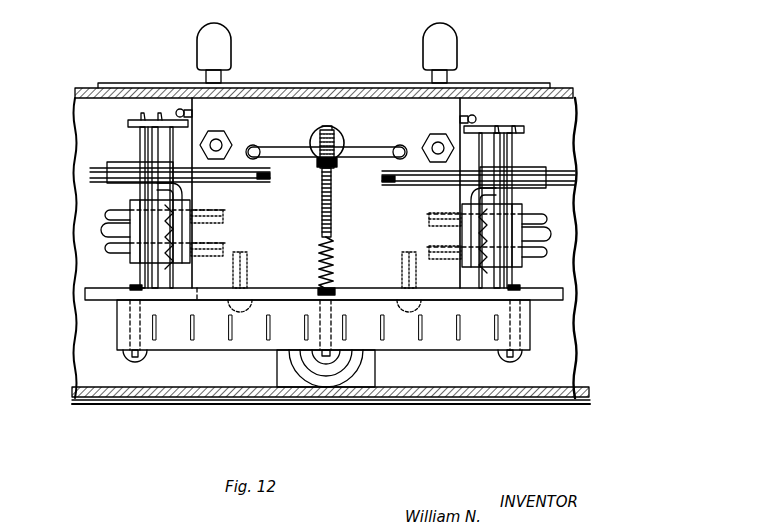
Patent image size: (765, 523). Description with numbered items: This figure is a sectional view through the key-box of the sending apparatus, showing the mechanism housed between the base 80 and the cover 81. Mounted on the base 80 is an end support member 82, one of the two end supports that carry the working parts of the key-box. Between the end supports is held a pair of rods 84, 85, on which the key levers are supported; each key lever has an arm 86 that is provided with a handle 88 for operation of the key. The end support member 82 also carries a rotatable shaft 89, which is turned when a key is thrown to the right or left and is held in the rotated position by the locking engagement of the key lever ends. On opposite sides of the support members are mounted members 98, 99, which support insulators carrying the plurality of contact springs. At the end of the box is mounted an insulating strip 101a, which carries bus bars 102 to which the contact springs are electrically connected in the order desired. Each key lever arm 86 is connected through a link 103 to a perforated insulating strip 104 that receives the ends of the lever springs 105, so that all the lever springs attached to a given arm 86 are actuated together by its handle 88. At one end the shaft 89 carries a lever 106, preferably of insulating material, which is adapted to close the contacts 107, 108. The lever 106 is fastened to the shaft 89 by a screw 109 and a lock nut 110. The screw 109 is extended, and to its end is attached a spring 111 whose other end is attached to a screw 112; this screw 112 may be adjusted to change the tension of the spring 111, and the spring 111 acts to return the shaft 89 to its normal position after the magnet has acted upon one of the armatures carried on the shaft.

The base 80 is at (104, 300).
The cover 81 is at (573, 92).
The end support member 82 is at (452, 108).
The rod 84 is at (221, 144).
The rod 85 is at (437, 146).
The key lever arm 86 is at (206, 77).
The handle 88 is at (228, 62).
The rotatable shaft 89 is at (335, 132).
The spring-supporting member 98 is at (462, 271).
The spring-supporting member 99 is at (190, 263).
The insulating strip 101a is at (468, 350).
The bus bar 102 is at (230, 342).
The link 103 is at (190, 114).
The insulating strip 104 is at (150, 120).
The lever spring 105 is at (140, 118).
The lever 106 is at (367, 148).
The contact 107 is at (268, 178).
The contact 108 is at (384, 181).
The screw 109 is at (309, 136).
The lock nut 110 is at (335, 165).
The spring 111 is at (333, 262).
The adjustable screw 112 is at (315, 282).